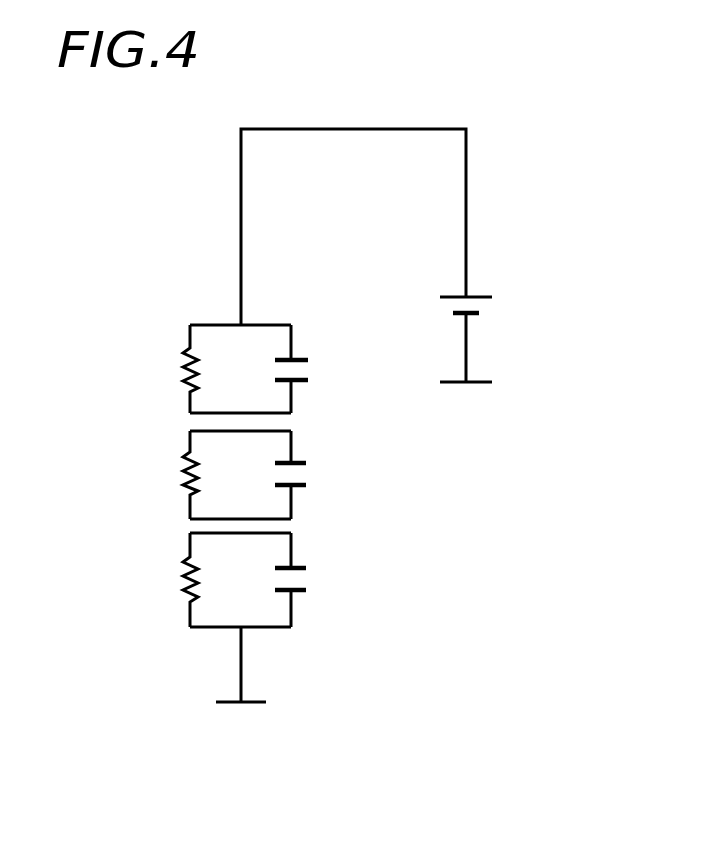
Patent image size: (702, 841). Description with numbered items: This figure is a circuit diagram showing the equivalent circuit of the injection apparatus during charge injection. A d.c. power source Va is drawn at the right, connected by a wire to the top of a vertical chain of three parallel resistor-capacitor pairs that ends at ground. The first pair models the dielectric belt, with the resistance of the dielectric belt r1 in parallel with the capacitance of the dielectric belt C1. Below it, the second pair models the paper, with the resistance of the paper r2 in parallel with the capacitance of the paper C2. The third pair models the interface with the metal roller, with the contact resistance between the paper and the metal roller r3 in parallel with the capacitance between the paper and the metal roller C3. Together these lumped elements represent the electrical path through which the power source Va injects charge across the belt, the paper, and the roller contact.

The resistance of dielectric belt r1 is at (237, 369).
The capacitance of dielectric belt C1 is at (311, 369).
The resistance of paper r2 is at (237, 475).
The capacitance of paper C2 is at (311, 475).
The contact resistance between paper and metal roller r3 is at (237, 580).
The capacitance between paper and metal roller C3 is at (311, 580).
The d.c. power source Va is at (492, 335).